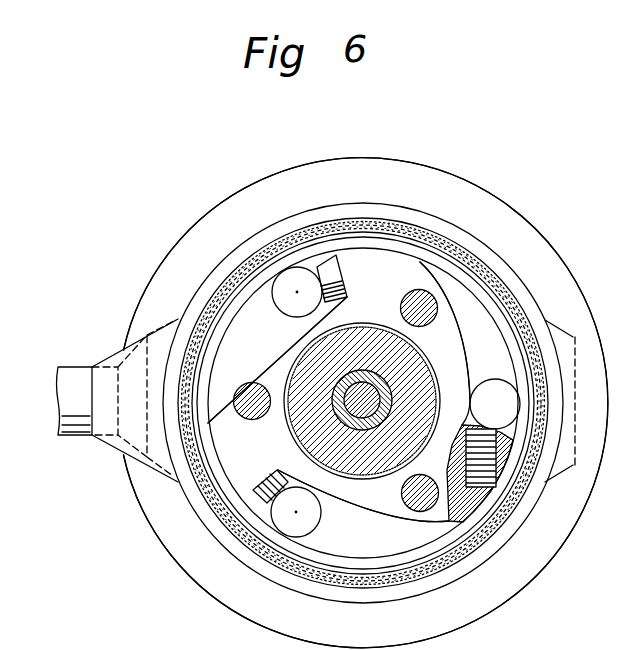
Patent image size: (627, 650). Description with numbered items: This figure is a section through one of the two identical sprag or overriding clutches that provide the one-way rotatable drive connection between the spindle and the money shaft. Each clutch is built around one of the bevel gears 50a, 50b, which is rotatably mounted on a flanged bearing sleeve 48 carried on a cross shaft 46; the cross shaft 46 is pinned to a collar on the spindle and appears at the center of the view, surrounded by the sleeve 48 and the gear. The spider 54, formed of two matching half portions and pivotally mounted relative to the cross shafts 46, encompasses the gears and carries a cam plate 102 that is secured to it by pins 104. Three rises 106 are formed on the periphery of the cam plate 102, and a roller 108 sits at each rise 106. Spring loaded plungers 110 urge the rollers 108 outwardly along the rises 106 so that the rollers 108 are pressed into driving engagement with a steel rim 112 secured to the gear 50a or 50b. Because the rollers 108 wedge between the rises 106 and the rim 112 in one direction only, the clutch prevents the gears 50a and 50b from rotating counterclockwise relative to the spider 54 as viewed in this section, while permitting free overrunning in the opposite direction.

The cross shaft 46 is at (383, 410).
The flanged bearing sleeve 48 is at (403, 382).
The bevel gear 50a is at (498, 192).
The bevel gear 50b is at (366, 403).
The spider 54 is at (300, 212).
The cam plate 102 is at (272, 447).
The pin 104 is at (419, 288).
The rise 106 is at (263, 349).
The roller 108 is at (281, 317).
The spring loaded plunger 110 is at (239, 492).
The steel rim 112 is at (362, 233).